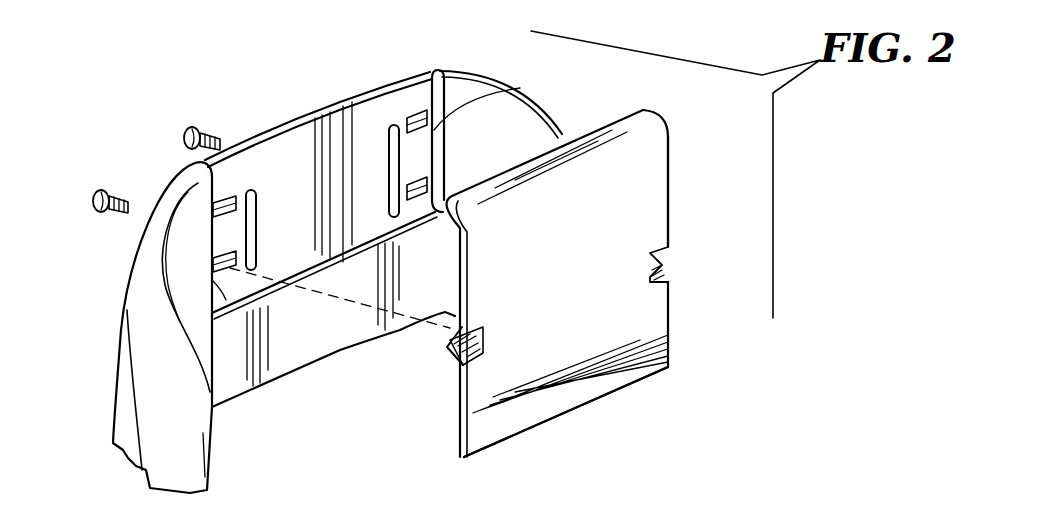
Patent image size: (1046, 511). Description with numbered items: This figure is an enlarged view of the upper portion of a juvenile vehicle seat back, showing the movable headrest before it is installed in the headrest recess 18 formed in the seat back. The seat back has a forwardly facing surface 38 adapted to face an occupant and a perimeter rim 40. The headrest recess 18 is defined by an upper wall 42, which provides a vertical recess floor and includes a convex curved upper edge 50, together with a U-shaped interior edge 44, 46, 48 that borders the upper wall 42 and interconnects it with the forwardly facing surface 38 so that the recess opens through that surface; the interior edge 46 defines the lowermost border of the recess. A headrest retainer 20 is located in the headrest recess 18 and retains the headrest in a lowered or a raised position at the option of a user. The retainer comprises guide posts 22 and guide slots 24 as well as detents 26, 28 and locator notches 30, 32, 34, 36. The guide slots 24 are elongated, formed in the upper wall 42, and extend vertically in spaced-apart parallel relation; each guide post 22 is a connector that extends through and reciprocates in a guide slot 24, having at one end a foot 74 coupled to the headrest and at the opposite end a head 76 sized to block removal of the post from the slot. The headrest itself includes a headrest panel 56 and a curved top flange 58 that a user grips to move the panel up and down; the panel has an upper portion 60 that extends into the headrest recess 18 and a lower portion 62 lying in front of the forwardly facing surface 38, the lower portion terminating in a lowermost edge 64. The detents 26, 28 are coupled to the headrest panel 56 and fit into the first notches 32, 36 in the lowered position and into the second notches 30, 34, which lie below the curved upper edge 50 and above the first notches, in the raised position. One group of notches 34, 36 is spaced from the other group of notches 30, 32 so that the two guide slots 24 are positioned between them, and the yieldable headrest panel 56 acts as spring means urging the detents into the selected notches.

The headrest recess 18 is at (327, 201).
The headrest retainer 20 is at (158, 162).
The guide posts 22 is at (177, 164).
The guide slots 24 is at (256, 230).
The detent 26 is at (430, 359).
The detent 28 is at (684, 252).
The second notch 30 is at (224, 193).
The first notch 32 is at (226, 288).
The second notch 34 is at (444, 73).
The first notch 36 is at (418, 180).
The forwardly facing surface 38 is at (280, 363).
The perimeter rim 40 is at (147, 333).
The upper wall 42 is at (290, 157).
The interior edge 44 is at (232, 275).
The interior edge 46 is at (318, 267).
The interior edge 48 is at (508, 110).
The convex curved upper edge 50 is at (330, 103).
The headrest panel 56 is at (555, 272).
The top flange 58 is at (589, 177).
The upper portion 60 is at (647, 197).
The lower portion 62 is at (503, 430).
The lowermost edge 64 is at (587, 403).
The foot 74 is at (215, 135).
The head 76 is at (190, 128).